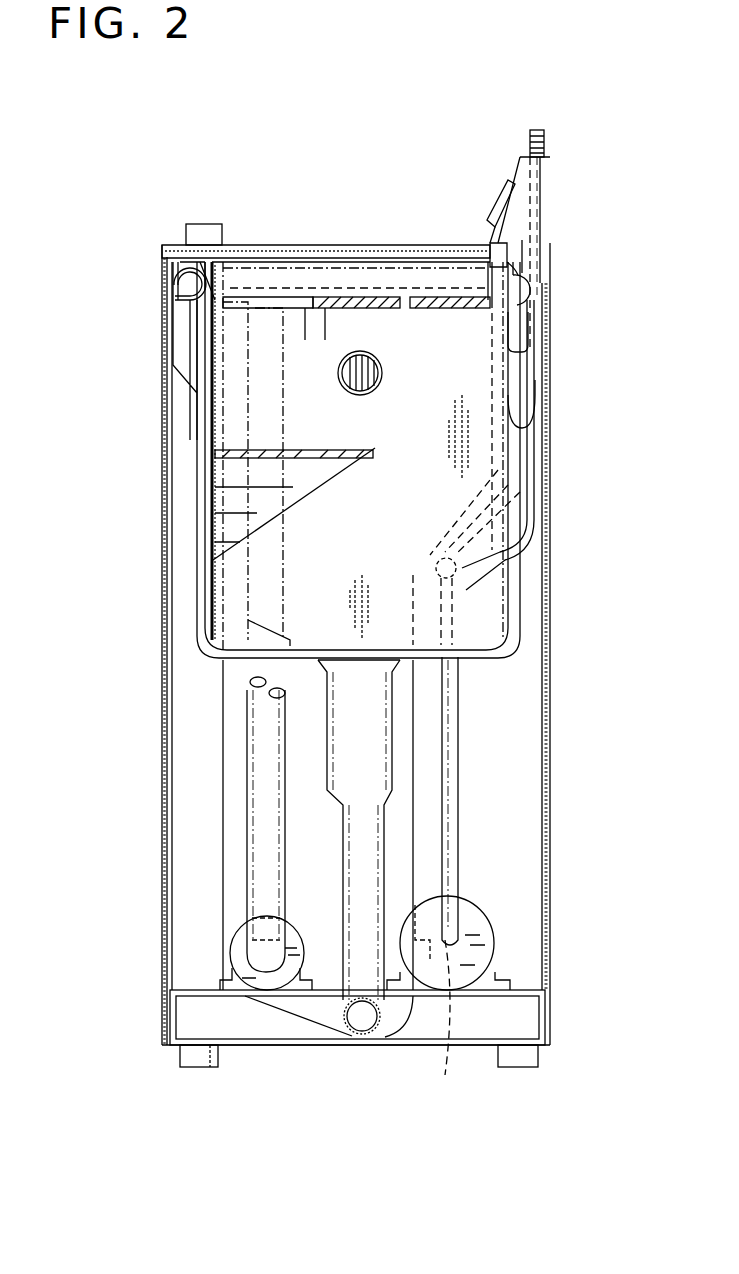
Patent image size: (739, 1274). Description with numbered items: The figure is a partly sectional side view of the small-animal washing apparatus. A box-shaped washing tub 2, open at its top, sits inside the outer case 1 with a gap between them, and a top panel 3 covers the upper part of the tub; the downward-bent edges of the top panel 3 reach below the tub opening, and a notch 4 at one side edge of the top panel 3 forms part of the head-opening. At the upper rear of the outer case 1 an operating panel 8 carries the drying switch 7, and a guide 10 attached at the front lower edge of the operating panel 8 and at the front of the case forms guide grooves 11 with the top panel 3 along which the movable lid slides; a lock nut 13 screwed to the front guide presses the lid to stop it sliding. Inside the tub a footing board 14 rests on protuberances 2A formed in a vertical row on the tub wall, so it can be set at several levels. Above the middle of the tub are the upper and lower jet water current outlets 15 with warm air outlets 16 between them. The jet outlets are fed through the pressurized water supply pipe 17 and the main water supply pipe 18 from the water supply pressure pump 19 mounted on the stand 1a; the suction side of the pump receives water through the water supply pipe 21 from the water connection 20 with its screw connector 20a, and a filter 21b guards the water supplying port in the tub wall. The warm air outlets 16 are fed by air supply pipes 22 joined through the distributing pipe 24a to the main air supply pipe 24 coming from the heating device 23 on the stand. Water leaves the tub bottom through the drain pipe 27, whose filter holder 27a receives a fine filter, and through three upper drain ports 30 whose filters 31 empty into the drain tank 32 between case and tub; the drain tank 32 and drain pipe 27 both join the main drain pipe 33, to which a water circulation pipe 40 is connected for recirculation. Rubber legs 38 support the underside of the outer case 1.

The outer case 1 is at (548, 638).
The stand 1a is at (487, 996).
The washing tub 2 is at (307, 573).
The protuberances (footing board stoppers) 2A is at (293, 487).
The top panel 3 is at (370, 247).
The notch 4 is at (300, 245).
The drying switch 7 is at (490, 195).
The operating panel 8 is at (550, 205).
The guide 10 is at (178, 245).
The guide groove 11 is at (200, 245).
The lock nut 13 is at (222, 232).
The footing board 14 is at (312, 450).
The jet water current outlets 15 is at (530, 318).
The warm air outlet 16 is at (383, 372).
The pressurized water supply pipe 17 is at (215, 458).
The main water supply pipe 18 is at (458, 800).
The water supply pressure pump 19 is at (478, 915).
The water supply pipe end with connector 20 is at (528, 133).
The connector 20a is at (545, 143).
The water supply pipe 21 is at (536, 437).
The filter 21b is at (525, 553).
The air supply pipe 22 is at (170, 335).
The heating device 23 is at (298, 938).
The main air supply pipe 24 is at (240, 848).
The distributing pipe 24a is at (174, 283).
The drain pipe 27 is at (380, 862).
The filter holder 27a is at (395, 722).
The upper drain port 30 is at (305, 312).
The filter 31 is at (365, 308).
The drain tank 32 is at (215, 778).
The main drain pipe 33 is at (360, 1040).
The rubber legs 38 is at (198, 1063).
The water circulation pipe 40 is at (449, 1021).